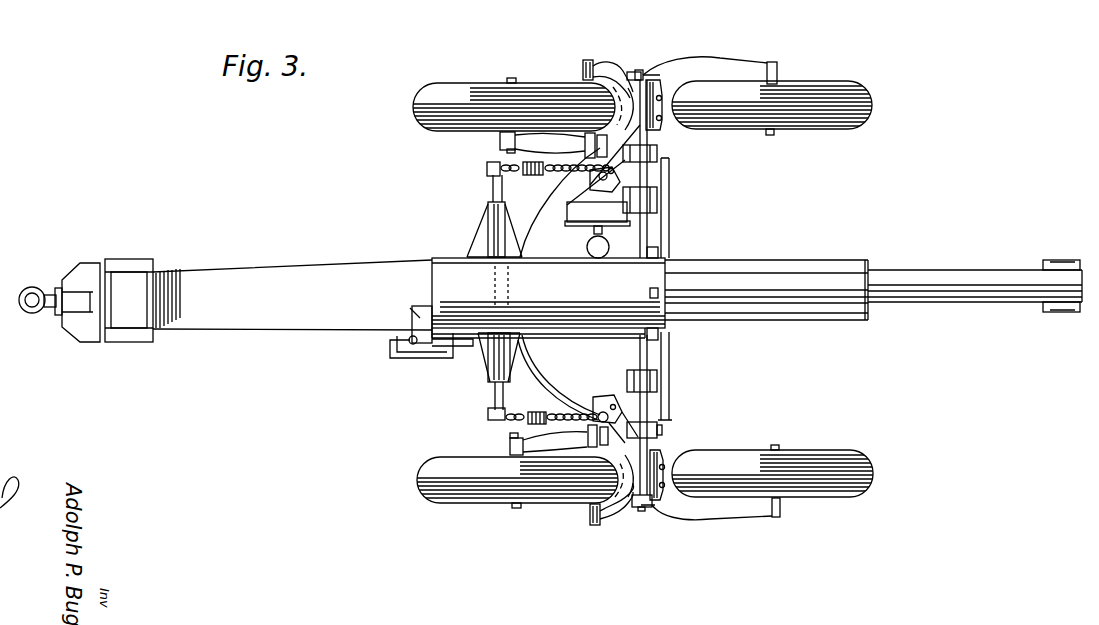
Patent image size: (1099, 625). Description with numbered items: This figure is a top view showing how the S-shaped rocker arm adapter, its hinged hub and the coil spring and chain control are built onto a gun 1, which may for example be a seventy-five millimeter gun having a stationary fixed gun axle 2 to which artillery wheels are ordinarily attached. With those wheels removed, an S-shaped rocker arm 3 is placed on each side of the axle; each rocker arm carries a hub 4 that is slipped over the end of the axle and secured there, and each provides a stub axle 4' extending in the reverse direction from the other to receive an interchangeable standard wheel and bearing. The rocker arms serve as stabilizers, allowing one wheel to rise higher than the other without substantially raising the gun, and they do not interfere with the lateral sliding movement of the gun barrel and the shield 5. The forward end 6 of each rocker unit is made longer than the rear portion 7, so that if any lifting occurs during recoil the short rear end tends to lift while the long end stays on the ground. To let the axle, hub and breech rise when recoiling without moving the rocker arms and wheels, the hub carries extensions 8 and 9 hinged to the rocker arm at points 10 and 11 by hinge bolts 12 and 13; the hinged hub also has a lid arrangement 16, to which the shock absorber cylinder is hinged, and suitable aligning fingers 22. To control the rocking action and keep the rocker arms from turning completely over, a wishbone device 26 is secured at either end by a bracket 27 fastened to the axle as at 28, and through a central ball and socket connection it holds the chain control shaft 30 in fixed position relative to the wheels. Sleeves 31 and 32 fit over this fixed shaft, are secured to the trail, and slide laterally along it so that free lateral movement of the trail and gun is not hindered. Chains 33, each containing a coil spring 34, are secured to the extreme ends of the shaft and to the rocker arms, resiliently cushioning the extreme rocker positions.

The gun 1 is at (906, 283).
The gun axle 2 is at (650, 408).
The S-shaped rocker arm 3 is at (696, 57).
The hub 4 is at (651, 290).
The stub axle 4' is at (655, 294).
The shield 5 is at (669, 355).
The forward end of the rocker unit 6 is at (737, 62).
The rear portion of the rocker unit 7 is at (509, 139).
The hub extension 8 is at (583, 70).
The hub extension 9 is at (587, 133).
The hinge point 10 is at (584, 62).
The hinge point 11 is at (578, 172).
The hinge bolt 12 is at (593, 61).
The hinge bolt 13 is at (607, 190).
The lid arrangement 16 is at (652, 75).
The aligning fingers 22 is at (662, 118).
The wishbone device 26 is at (537, 223).
The bracket 27 is at (645, 200).
The fastening of bracket to axle 28 is at (663, 429).
The chain control shaft 30 is at (490, 403).
The sleeve 31 is at (485, 353).
The sleeve 32 is at (489, 222).
The chain 33 is at (563, 173).
The coil spring 34 is at (530, 177).